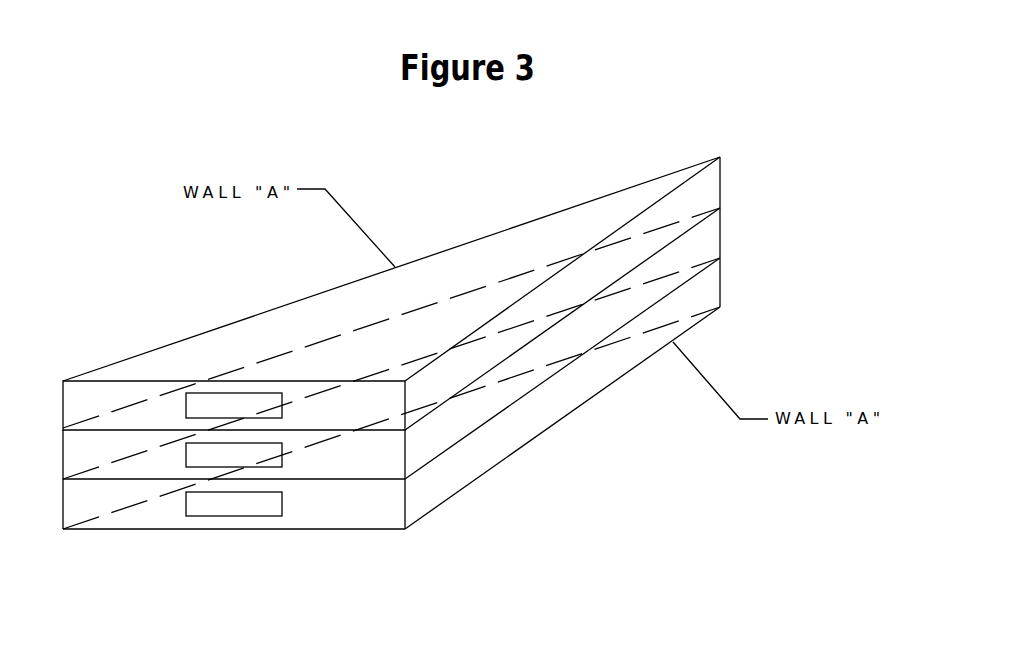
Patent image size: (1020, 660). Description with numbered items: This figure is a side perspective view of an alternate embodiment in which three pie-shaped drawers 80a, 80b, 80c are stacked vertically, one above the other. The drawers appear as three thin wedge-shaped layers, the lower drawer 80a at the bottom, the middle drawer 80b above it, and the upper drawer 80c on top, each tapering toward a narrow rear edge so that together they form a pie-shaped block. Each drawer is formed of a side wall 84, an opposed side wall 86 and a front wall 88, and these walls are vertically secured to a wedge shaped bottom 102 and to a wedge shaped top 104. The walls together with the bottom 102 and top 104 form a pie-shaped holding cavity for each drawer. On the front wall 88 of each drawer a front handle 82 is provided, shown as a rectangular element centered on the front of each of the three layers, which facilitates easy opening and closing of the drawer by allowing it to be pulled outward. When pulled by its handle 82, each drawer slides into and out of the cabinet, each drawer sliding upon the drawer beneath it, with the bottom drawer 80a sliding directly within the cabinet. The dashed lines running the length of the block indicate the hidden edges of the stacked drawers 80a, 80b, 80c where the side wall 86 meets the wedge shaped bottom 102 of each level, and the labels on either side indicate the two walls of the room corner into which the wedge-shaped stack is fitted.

The pie-shaped drawer 80a is at (345, 515).
The pie-shaped drawer 80b is at (307, 465).
The pie-shaped drawer 80c is at (85, 400).
The front handle 82 is at (193, 455).
The side wall 84 is at (545, 410).
The opposed side wall 86 is at (457, 262).
The front wall 88 is at (138, 520).
The wedge shaped bottom 102 is at (433, 513).
The wedge shaped top 104 is at (585, 218).